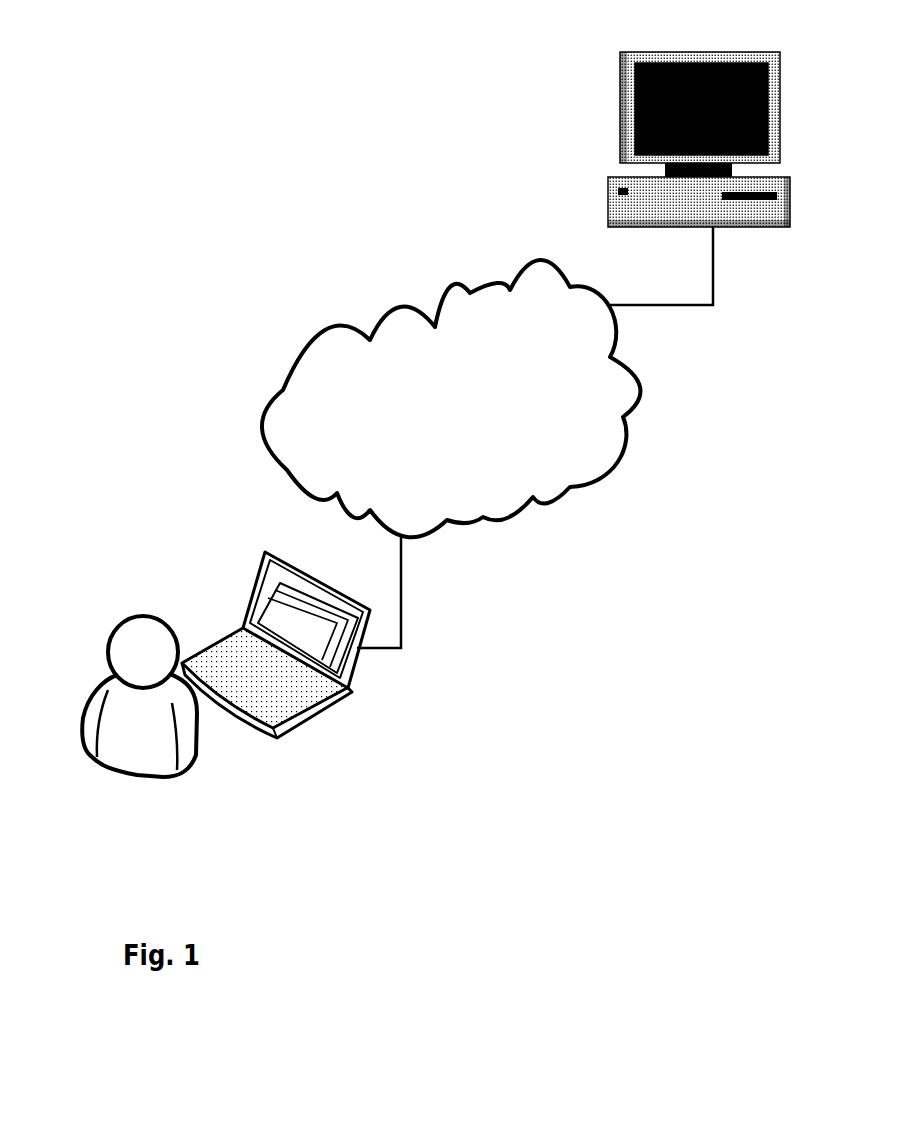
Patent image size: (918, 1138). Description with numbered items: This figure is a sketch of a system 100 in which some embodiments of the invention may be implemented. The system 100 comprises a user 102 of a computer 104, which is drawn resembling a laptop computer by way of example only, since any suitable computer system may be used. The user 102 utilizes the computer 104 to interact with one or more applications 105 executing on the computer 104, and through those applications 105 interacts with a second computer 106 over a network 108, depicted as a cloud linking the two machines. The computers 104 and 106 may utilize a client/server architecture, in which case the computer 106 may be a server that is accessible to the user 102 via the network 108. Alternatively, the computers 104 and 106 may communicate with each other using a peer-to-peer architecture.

The system 100 is at (212, 100).
The user 102 is at (95, 688).
The computer 104 is at (327, 707).
The applications 105 is at (262, 566).
The computer 106 is at (763, 53).
The network 108 is at (398, 305).